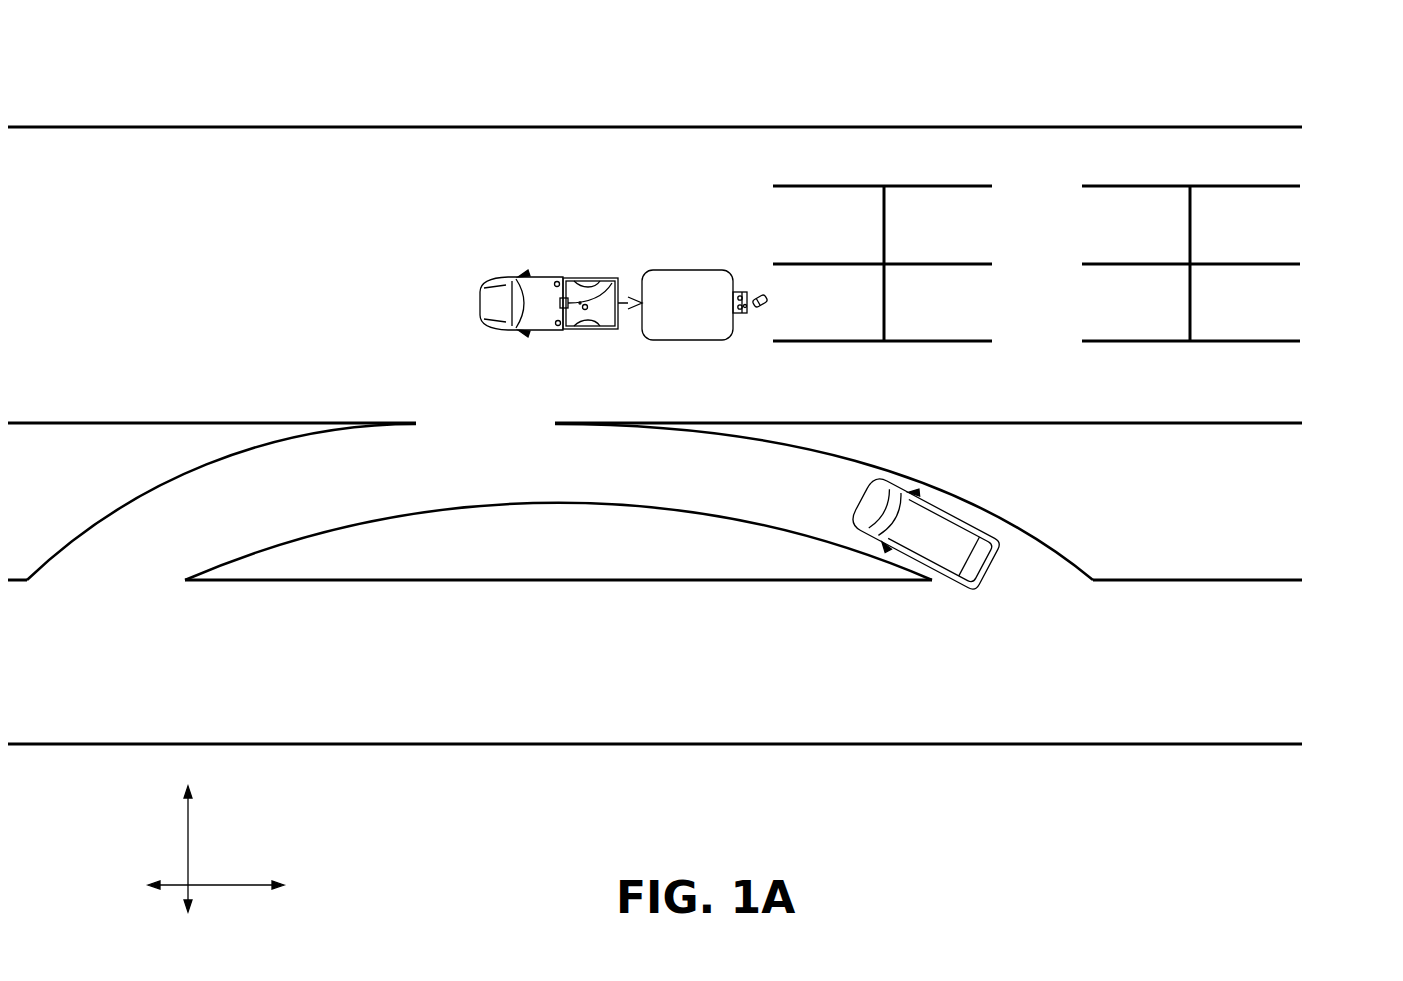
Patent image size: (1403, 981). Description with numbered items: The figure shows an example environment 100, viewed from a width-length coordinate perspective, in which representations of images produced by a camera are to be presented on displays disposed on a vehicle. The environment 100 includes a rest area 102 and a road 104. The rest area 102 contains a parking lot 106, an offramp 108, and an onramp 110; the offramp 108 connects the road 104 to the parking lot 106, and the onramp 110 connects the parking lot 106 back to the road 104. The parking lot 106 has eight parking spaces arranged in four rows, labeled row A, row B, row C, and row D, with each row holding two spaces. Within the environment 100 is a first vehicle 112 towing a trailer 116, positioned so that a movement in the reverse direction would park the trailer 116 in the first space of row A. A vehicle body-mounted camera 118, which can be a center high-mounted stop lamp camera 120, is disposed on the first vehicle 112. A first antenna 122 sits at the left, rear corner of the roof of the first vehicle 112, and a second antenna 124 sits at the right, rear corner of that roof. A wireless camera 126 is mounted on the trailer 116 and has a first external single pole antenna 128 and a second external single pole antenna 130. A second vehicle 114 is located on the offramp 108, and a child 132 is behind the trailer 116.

The environment 100 is at (99, 60).
The rest area 102 is at (1310, 111).
The road 104 is at (1060, 707).
The parking lot 106 is at (695, 152).
The offramp 108 is at (1027, 540).
The onramp 110 is at (206, 476).
The first vehicle 112 is at (505, 278).
The second vehicle 114 is at (980, 556).
The trailer 116 is at (690, 323).
The vehicle body-mounted camera 118 is at (575, 307).
The center high-mounted stop lamp camera 120 is at (610, 262).
The first antenna 122 is at (558, 325).
The second antenna 124 is at (557, 283).
The wireless camera 126 is at (746, 306).
The first external single pole antenna 128 is at (740, 314).
The second external single pole antenna 130 is at (742, 292).
The child 132 is at (760, 297).